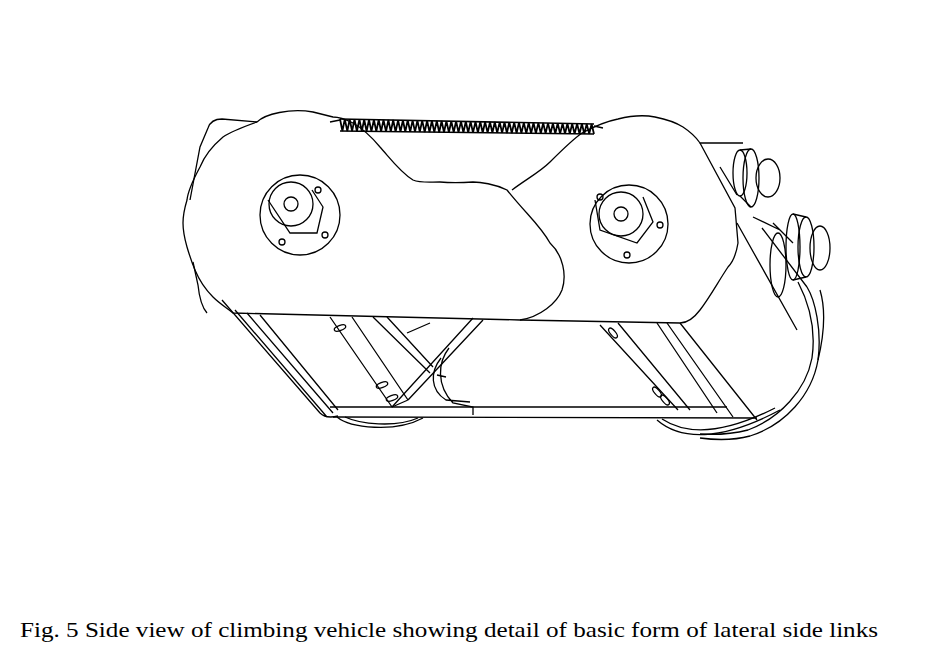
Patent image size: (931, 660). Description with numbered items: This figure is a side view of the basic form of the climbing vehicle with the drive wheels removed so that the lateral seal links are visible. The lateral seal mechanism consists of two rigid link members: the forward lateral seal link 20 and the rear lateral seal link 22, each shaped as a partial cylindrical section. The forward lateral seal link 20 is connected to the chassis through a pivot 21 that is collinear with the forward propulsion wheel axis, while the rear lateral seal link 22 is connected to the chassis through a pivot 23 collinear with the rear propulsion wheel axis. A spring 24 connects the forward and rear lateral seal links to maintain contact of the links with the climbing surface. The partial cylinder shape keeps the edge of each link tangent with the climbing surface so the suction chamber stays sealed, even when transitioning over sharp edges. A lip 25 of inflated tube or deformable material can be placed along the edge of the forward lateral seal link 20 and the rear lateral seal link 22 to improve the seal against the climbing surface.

The forward lateral seal link 20 is at (763, 343).
The pivot 21 is at (650, 192).
The rear lateral seal link 22 is at (257, 347).
The pivot 23 is at (298, 170).
The spring 24 is at (455, 103).
The lip 25 is at (303, 372).